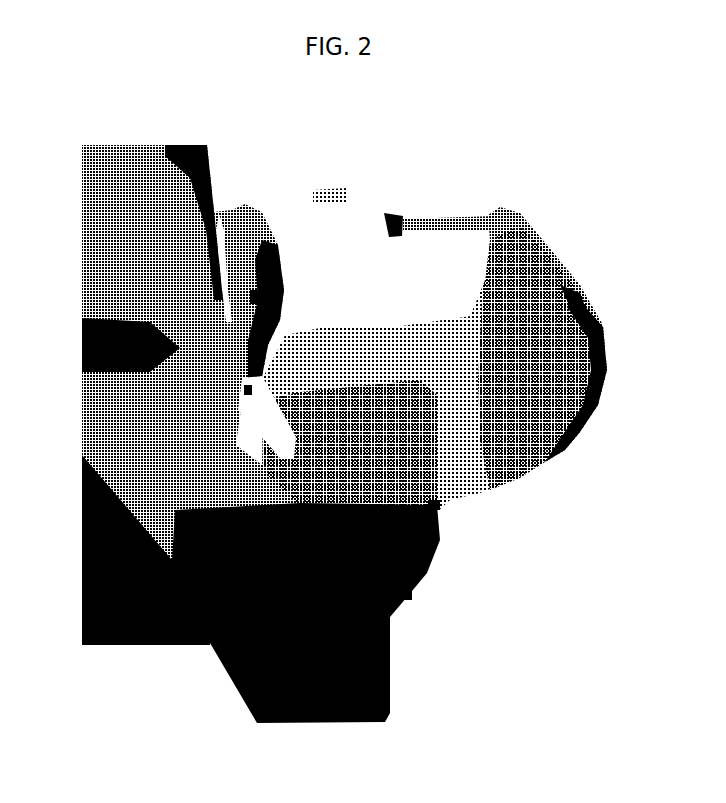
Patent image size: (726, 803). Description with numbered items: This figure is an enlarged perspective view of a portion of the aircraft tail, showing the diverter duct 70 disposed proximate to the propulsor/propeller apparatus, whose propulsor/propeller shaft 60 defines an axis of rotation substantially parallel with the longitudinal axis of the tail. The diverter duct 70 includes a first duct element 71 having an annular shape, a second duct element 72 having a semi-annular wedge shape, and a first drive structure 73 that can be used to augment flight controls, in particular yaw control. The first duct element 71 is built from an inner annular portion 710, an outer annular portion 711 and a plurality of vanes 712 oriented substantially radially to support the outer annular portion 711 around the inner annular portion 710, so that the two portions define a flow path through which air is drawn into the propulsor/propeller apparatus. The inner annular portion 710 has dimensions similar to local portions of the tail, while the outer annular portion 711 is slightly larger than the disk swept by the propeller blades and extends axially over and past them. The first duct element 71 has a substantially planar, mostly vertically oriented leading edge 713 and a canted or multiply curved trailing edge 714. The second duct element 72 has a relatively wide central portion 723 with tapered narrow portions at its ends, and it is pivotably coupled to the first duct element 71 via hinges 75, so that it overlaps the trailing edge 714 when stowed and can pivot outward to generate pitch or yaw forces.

The propulsor/propeller shaft 60 is at (282, 408).
The diverter duct 70 is at (447, 517).
The first duct element 71 is at (322, 192).
The second duct element 72 is at (535, 248).
The first drive structure 73 is at (447, 223).
The hinges 75 is at (433, 507).
The inner annular portion 710 is at (250, 390).
The outer annular portion 711 is at (232, 247).
The vanes 712 is at (257, 300).
The leading edge 713 is at (287, 433).
The trailing edge 714 is at (405, 595).
The central portion 723 is at (567, 293).